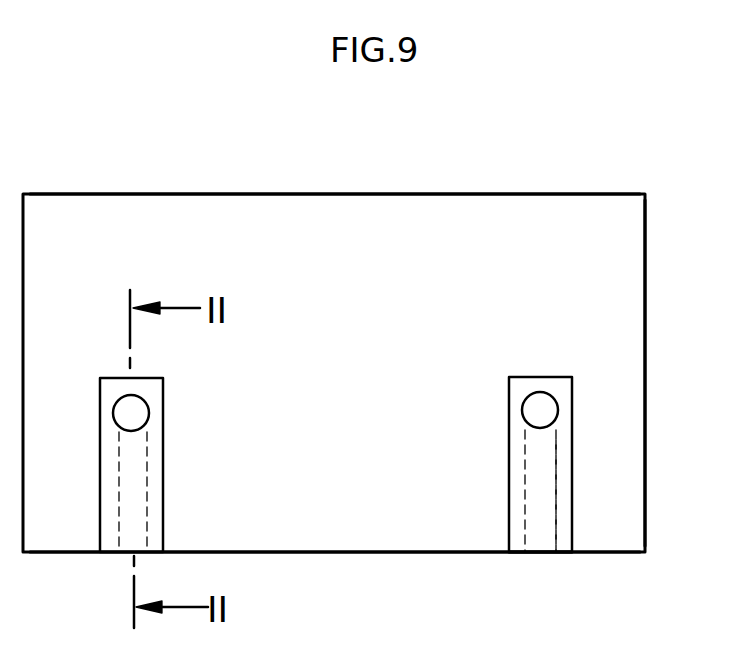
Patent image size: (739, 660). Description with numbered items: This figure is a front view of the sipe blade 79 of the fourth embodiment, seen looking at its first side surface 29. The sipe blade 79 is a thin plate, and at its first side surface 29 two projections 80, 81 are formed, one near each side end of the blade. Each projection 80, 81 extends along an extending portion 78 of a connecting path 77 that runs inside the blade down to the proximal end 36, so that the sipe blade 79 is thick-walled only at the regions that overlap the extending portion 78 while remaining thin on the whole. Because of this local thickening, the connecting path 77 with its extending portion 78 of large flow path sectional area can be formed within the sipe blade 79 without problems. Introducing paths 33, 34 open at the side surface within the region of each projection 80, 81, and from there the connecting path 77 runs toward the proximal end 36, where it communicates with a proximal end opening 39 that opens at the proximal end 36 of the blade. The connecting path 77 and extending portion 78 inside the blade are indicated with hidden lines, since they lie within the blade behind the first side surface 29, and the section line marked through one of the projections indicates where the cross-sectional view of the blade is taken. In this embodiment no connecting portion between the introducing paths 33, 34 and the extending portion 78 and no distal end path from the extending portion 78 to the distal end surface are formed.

The first side surface 29 is at (353, 222).
The sipe blade 79 is at (484, 193).
The proximal end 36 is at (385, 553).
The projection 80 is at (358, 420).
The projection 81 is at (163, 478).
The introducing path 33 is at (209, 400).
The introducing path 34 is at (135, 414).
The connecting path 77 is at (575, 448).
The extending portion 78 is at (550, 507).
The proximal end opening 39 is at (550, 553).